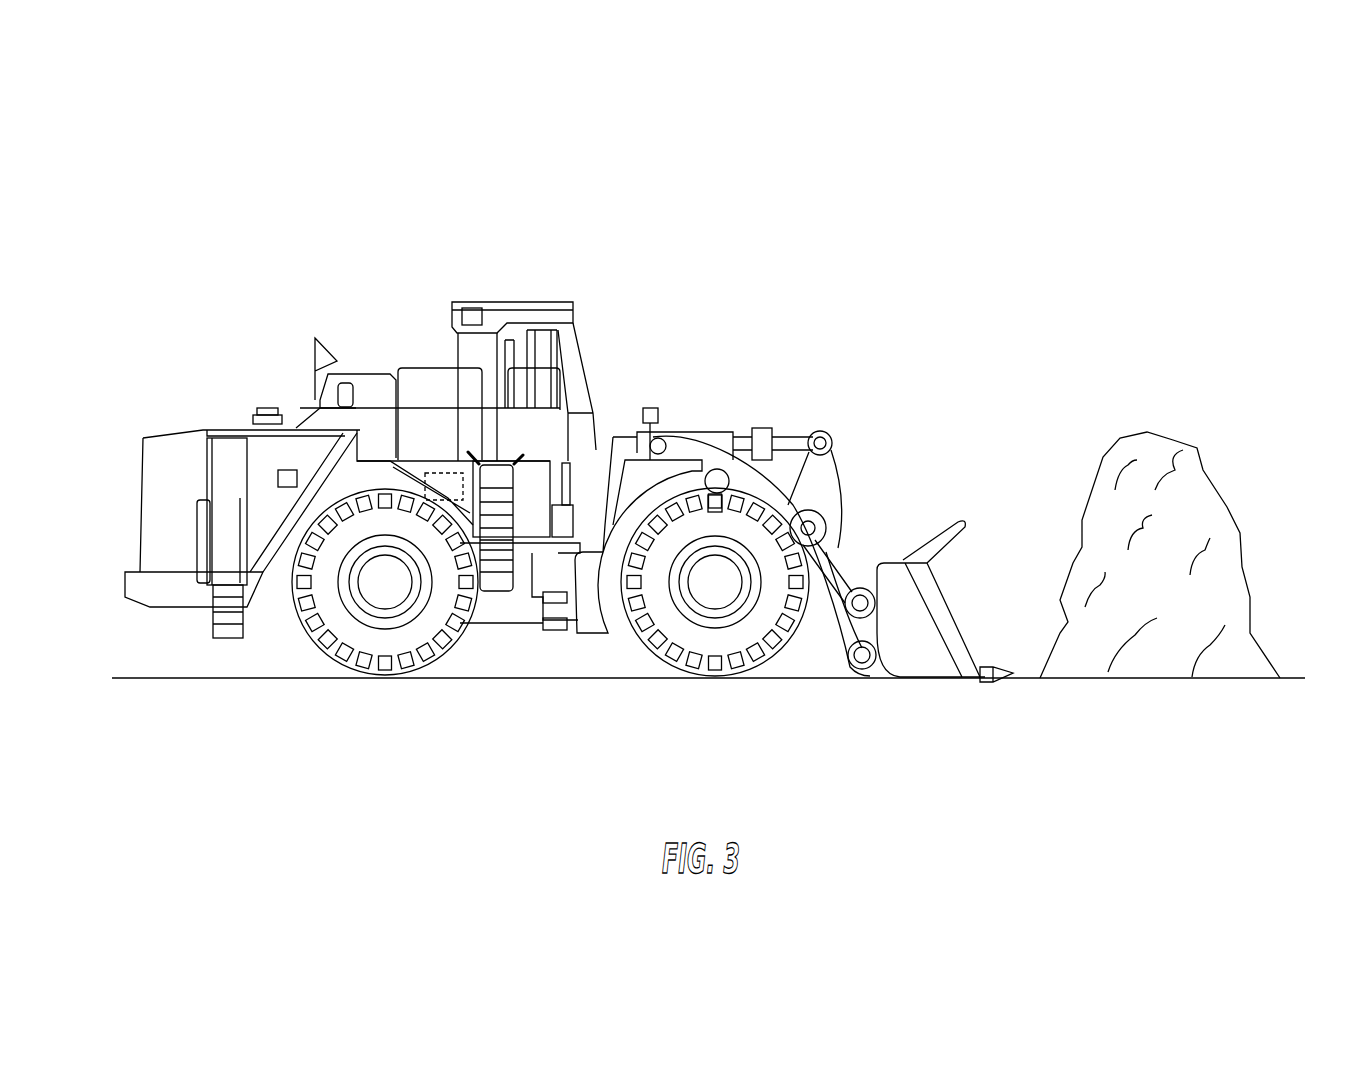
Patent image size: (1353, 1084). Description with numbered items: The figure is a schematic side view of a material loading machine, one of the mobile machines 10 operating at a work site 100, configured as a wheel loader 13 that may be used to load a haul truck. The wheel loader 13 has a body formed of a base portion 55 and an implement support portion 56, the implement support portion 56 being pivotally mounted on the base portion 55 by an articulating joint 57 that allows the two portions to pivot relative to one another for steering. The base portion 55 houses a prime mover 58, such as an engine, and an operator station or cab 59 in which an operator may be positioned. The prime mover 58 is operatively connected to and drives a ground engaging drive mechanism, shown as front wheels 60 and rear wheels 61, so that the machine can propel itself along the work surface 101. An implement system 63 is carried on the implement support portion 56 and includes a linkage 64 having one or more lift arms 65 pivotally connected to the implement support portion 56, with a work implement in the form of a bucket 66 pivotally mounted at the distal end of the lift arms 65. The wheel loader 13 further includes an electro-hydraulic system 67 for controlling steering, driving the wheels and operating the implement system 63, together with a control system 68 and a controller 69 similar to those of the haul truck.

The mobile machine 10 is at (560, 202).
The wheel loader 13 is at (498, 310).
The base portion 55 is at (263, 587).
The implement support portion 56 is at (597, 620).
The articulating joint 57 is at (562, 480).
The prime mover 58 is at (248, 427).
The cab 59 is at (533, 315).
The front wheels 60 is at (678, 667).
The rear wheels 61 is at (347, 673).
The implement system 63 is at (889, 374).
The linkage 64 is at (907, 400).
The lift arms 65 is at (820, 602).
The bucket 66 is at (937, 603).
The electro-hydraulic system 67 is at (478, 195).
The control system 68 is at (375, 215).
The controller 69 is at (448, 478).
The work site 100 is at (940, 225).
The work surface 101 is at (150, 674).